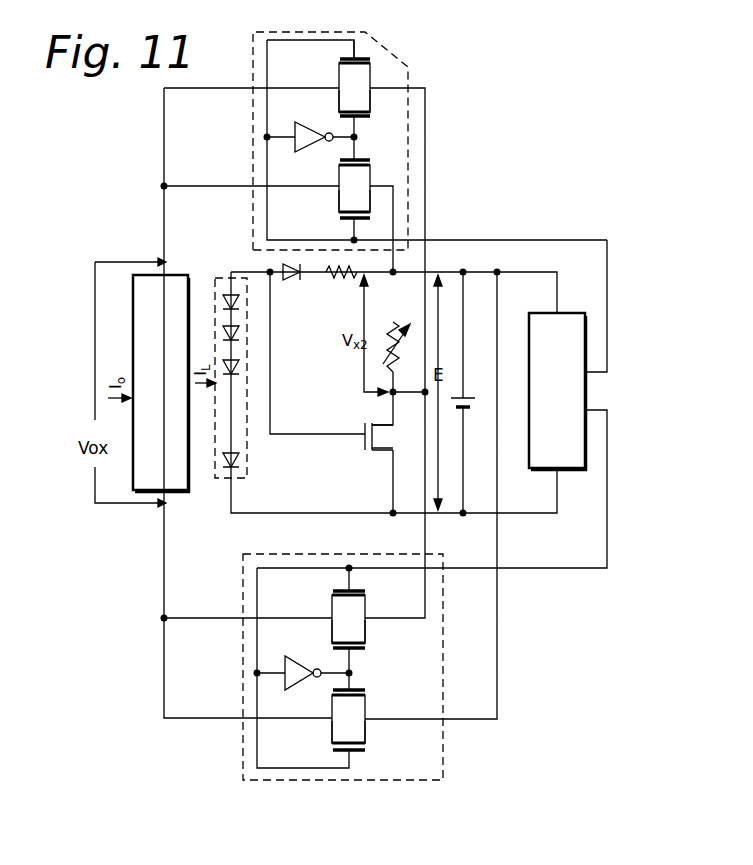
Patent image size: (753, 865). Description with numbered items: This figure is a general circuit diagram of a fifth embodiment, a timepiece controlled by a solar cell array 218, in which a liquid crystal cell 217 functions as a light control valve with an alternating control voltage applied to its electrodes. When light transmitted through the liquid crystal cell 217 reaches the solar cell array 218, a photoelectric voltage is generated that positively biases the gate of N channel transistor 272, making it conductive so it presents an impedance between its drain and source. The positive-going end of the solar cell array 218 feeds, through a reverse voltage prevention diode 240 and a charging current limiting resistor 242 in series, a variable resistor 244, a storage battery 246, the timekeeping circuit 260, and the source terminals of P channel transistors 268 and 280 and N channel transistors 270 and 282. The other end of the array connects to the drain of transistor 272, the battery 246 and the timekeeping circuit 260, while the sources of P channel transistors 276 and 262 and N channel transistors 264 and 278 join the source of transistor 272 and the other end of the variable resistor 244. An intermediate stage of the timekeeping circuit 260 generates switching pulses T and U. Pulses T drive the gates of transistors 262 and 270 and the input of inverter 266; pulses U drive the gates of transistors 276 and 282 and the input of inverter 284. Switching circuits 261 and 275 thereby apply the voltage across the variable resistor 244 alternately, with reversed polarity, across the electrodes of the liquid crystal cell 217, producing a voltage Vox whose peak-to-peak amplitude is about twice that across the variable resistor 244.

The liquid crystal cell 217 is at (133, 345).
The solar cell array 218 is at (218, 272).
The reverse voltage prevention diode 240 is at (290, 280).
The charging current limiting resistor 242 is at (340, 276).
The variable resistor 244 is at (397, 322).
The storage battery 246 is at (478, 402).
The timekeeping circuit 260 is at (587, 390).
The switching circuit 261 is at (410, 67).
The P channel transistor 262 is at (339, 67).
The N channel transistor 264 is at (339, 107).
The inverter 266 is at (302, 151).
The P channel MOS transistor 268 is at (370, 172).
The N channel MOS transistor 270 is at (370, 202).
The N channel transistor 272 is at (376, 452).
The switching circuit 275 is at (443, 612).
The P channel transistor 276 is at (365, 598).
The N channel transistor 278 is at (365, 640).
The P channel MOS transistor 280 is at (365, 700).
The N channel transistor 282 is at (365, 741).
The inverter 284 is at (290, 658).